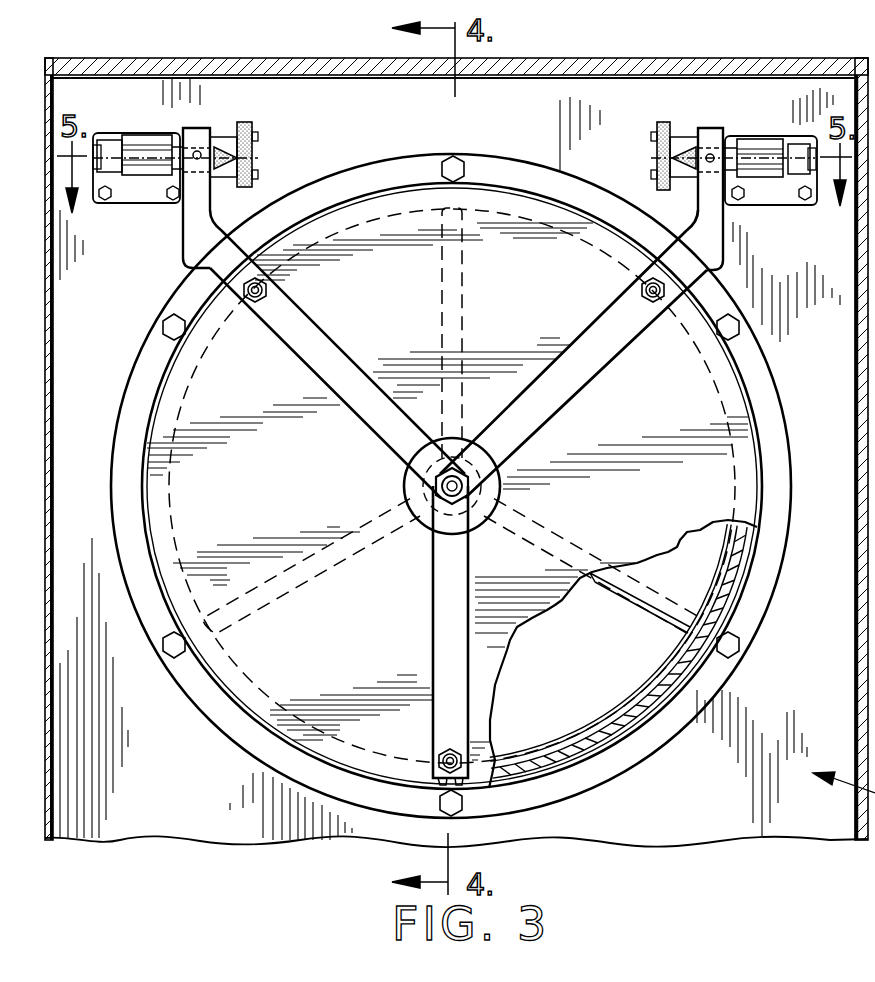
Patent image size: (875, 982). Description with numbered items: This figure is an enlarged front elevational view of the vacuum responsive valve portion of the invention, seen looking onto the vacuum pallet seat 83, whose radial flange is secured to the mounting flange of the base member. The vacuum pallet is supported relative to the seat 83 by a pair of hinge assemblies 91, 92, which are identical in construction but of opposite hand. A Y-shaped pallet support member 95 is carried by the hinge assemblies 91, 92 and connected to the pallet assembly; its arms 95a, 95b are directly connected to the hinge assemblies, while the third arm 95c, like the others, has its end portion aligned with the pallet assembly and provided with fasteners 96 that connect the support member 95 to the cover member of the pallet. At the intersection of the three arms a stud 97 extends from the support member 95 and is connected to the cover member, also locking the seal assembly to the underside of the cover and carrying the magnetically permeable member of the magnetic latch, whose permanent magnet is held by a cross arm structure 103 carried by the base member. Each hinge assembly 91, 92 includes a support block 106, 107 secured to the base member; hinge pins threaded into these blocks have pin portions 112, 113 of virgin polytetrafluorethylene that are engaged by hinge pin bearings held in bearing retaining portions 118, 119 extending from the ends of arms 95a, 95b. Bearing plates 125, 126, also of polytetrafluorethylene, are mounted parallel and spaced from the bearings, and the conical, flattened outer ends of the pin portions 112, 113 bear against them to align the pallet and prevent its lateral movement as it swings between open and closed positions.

The vacuum pallet seat 83 is at (628, 748).
The hinge assembly 91 is at (222, 136).
The hinge assembly 92 is at (706, 143).
The Y-shaped pallet support member 95 is at (458, 497).
The arm 95a is at (335, 362).
The arm 95b is at (544, 387).
The arm 95c is at (433, 645).
The fasteners 96 is at (268, 288).
The stud 97 is at (438, 485).
The cross arm structure 103 is at (625, 583).
The support block 106 is at (142, 158).
The support block 107 is at (768, 163).
The pin portion 112 is at (223, 145).
The pin portion 113 is at (692, 148).
The bearing retaining portion 118 is at (199, 132).
The bearing retaining portion 119 is at (716, 131).
The bearing plate 125 is at (253, 158).
The bearing plate 126 is at (657, 156).